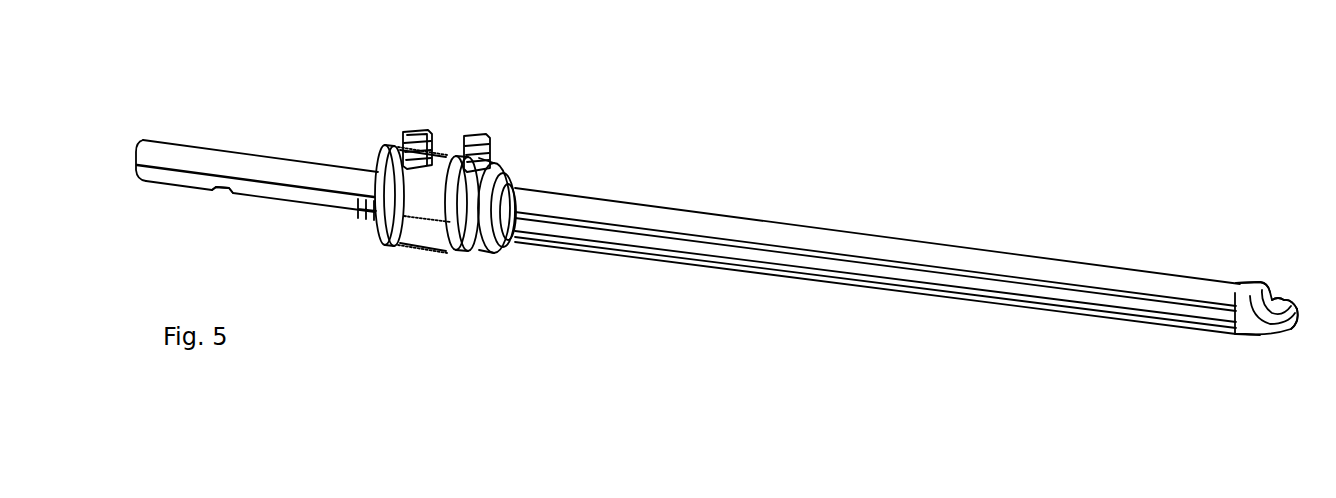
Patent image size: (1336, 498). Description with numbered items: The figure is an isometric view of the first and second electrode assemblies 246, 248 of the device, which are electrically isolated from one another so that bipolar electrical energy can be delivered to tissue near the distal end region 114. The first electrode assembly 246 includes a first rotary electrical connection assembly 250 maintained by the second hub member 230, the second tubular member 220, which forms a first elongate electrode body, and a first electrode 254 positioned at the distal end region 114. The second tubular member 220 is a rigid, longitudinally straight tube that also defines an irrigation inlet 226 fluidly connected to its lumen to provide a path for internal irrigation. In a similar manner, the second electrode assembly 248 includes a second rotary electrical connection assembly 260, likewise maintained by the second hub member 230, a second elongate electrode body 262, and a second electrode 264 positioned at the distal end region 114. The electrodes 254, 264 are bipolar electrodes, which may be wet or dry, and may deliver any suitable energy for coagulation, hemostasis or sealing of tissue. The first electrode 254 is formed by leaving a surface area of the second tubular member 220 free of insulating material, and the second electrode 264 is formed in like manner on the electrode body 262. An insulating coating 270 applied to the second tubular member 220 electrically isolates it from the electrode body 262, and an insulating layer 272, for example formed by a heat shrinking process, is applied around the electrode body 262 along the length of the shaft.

The distal end region 114 is at (1233, 248).
The second tubular member 220 is at (160, 172).
The irrigation inlet 226 is at (222, 194).
The second hub member 230 is at (380, 152).
The first electrode assembly 246 is at (413, 115).
The second electrode assembly 248 is at (498, 135).
The first rotary electrical connection assembly 250 is at (399, 208).
The first electrode 254 is at (1285, 301).
The second rotary electrical connection assembly 260 is at (468, 192).
The second elongate electrode body 262 is at (1241, 334).
The second electrode 264 is at (1285, 332).
The insulating coating 270 is at (1238, 298).
The insulating layer 272 is at (866, 251).